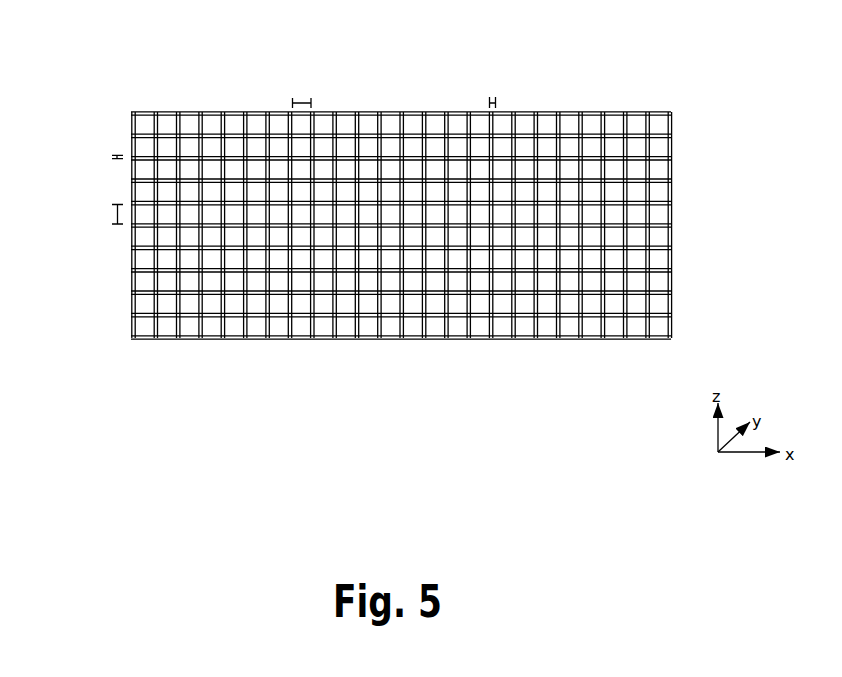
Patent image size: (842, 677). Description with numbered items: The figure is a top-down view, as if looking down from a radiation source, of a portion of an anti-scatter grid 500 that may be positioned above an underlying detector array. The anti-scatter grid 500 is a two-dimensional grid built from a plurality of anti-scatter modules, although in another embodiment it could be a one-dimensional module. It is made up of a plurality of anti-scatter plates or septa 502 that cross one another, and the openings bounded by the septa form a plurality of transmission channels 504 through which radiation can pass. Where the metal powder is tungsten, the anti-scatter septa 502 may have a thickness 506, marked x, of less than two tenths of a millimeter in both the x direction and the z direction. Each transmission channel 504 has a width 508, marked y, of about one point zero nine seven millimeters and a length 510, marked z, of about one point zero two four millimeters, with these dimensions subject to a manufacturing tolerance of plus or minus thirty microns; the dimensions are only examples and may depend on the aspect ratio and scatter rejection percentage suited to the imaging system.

The anti-scatter grid 500 is at (351, 202).
The anti-scatter septa 502 is at (342, 124).
The transmission channels 504 is at (253, 128).
The thickness 506 is at (93, 148).
The width 508 is at (302, 73).
The length 510 is at (93, 208).